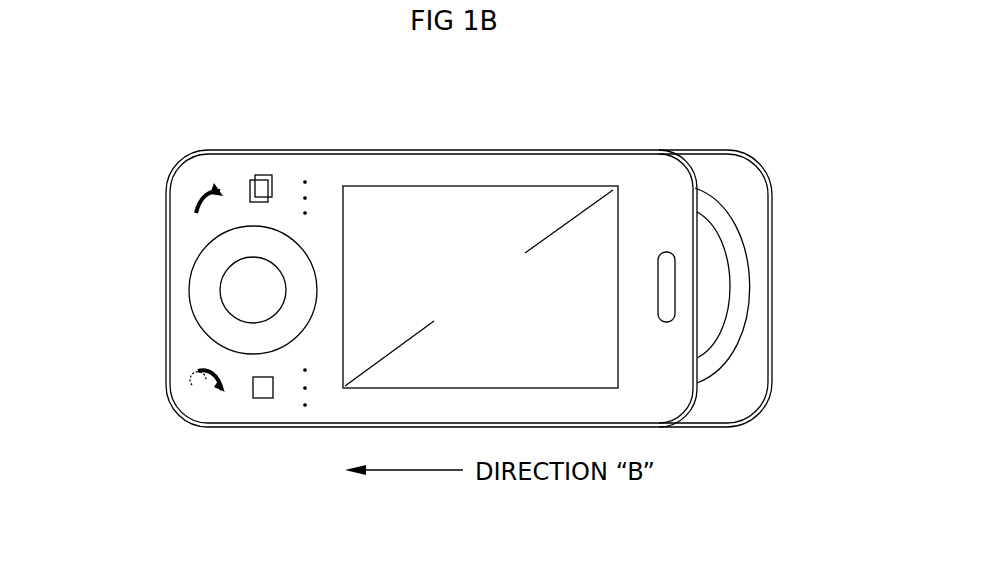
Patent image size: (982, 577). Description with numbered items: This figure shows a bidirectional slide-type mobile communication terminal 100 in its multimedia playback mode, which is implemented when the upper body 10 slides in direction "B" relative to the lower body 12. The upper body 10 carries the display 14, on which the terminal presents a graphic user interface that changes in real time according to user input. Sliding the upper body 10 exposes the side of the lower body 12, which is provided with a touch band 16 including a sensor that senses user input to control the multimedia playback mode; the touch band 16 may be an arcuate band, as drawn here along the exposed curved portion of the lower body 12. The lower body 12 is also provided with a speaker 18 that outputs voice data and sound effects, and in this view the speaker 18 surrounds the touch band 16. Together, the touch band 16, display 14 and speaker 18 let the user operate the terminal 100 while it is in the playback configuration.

The mobile communication terminal 100 is at (80, 318).
The upper body 10 is at (238, 185).
The lower body 12 is at (775, 221).
The display 14 is at (475, 203).
The touch band 16 is at (738, 297).
The speaker 18 is at (745, 362).